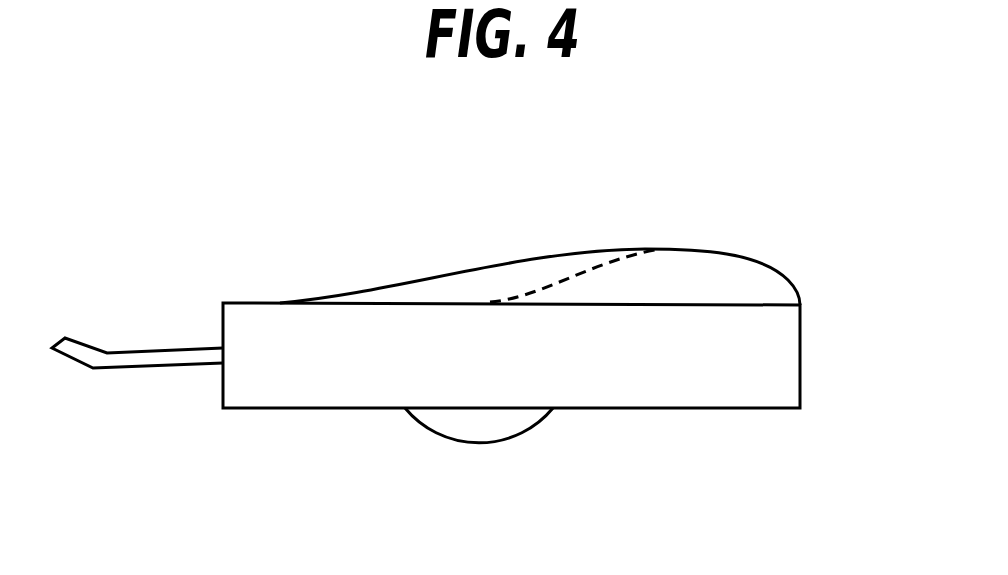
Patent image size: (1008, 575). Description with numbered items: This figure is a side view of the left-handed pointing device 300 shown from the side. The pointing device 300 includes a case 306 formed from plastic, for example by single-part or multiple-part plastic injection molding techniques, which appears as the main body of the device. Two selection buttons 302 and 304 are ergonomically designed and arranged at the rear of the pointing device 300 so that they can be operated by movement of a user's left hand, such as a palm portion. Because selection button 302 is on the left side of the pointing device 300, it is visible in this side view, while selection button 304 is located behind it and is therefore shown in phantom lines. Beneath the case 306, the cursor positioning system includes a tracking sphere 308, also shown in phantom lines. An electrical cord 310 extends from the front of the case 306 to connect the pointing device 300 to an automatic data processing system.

The pointing device 300 is at (491, 170).
The selection button 302 is at (530, 275).
The selection button 304 is at (752, 277).
The case 306 is at (730, 348).
The tracking sphere 308 is at (498, 446).
The electrical cord 310 is at (82, 338).